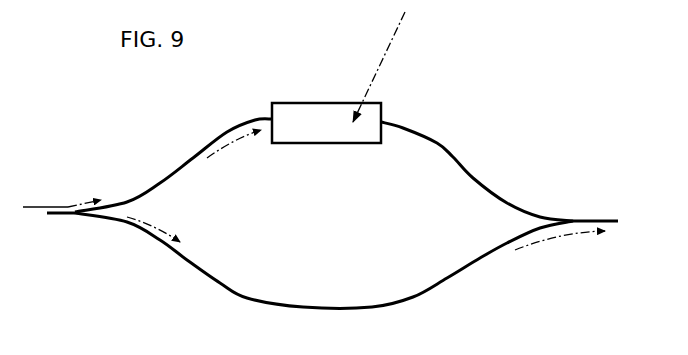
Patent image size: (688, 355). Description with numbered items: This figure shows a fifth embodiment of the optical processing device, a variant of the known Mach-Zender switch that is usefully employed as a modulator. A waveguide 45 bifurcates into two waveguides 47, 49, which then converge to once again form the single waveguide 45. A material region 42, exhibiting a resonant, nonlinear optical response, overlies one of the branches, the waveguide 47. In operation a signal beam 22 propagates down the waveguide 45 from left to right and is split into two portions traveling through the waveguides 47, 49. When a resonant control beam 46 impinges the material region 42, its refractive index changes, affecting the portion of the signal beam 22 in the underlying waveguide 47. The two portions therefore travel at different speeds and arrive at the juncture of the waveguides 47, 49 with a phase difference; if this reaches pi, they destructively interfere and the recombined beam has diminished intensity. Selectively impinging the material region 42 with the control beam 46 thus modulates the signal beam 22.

The signal beam 22 is at (46, 206).
The material region 42 is at (312, 103).
The waveguide 45 is at (57, 216).
The resonant control beam 46 is at (382, 62).
The waveguide 47 is at (470, 173).
The waveguide 49 is at (465, 272).